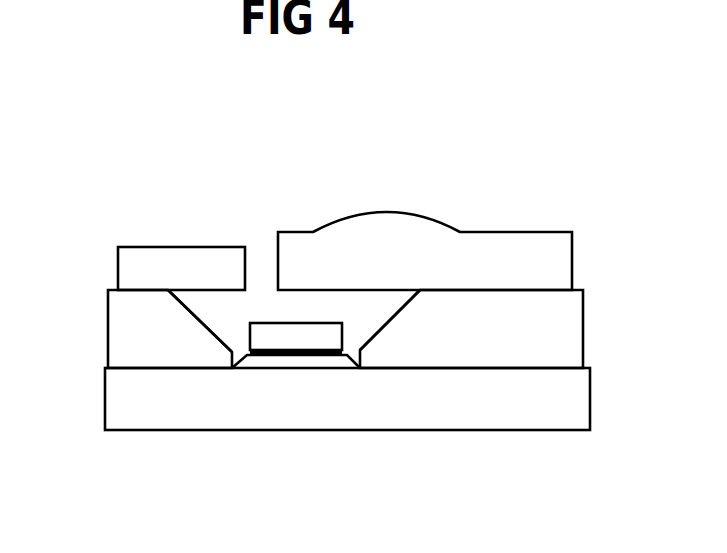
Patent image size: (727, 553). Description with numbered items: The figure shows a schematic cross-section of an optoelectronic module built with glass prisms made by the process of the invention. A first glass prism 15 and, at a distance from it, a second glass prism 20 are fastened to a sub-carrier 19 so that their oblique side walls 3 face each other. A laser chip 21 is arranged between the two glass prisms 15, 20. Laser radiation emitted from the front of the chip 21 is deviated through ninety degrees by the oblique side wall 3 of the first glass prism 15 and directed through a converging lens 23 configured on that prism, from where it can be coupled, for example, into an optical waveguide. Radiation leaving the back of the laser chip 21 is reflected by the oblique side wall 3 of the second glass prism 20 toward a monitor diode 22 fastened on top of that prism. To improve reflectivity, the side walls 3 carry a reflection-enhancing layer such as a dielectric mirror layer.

The oblique side wall 3 is at (200, 327).
The first glass prism 15 is at (555, 320).
The sub-carrier 19 is at (553, 393).
The second glass prism 20 is at (138, 323).
The laser chip 21 is at (270, 342).
The monitor diode 22 is at (162, 262).
The converging lens 23 is at (422, 232).